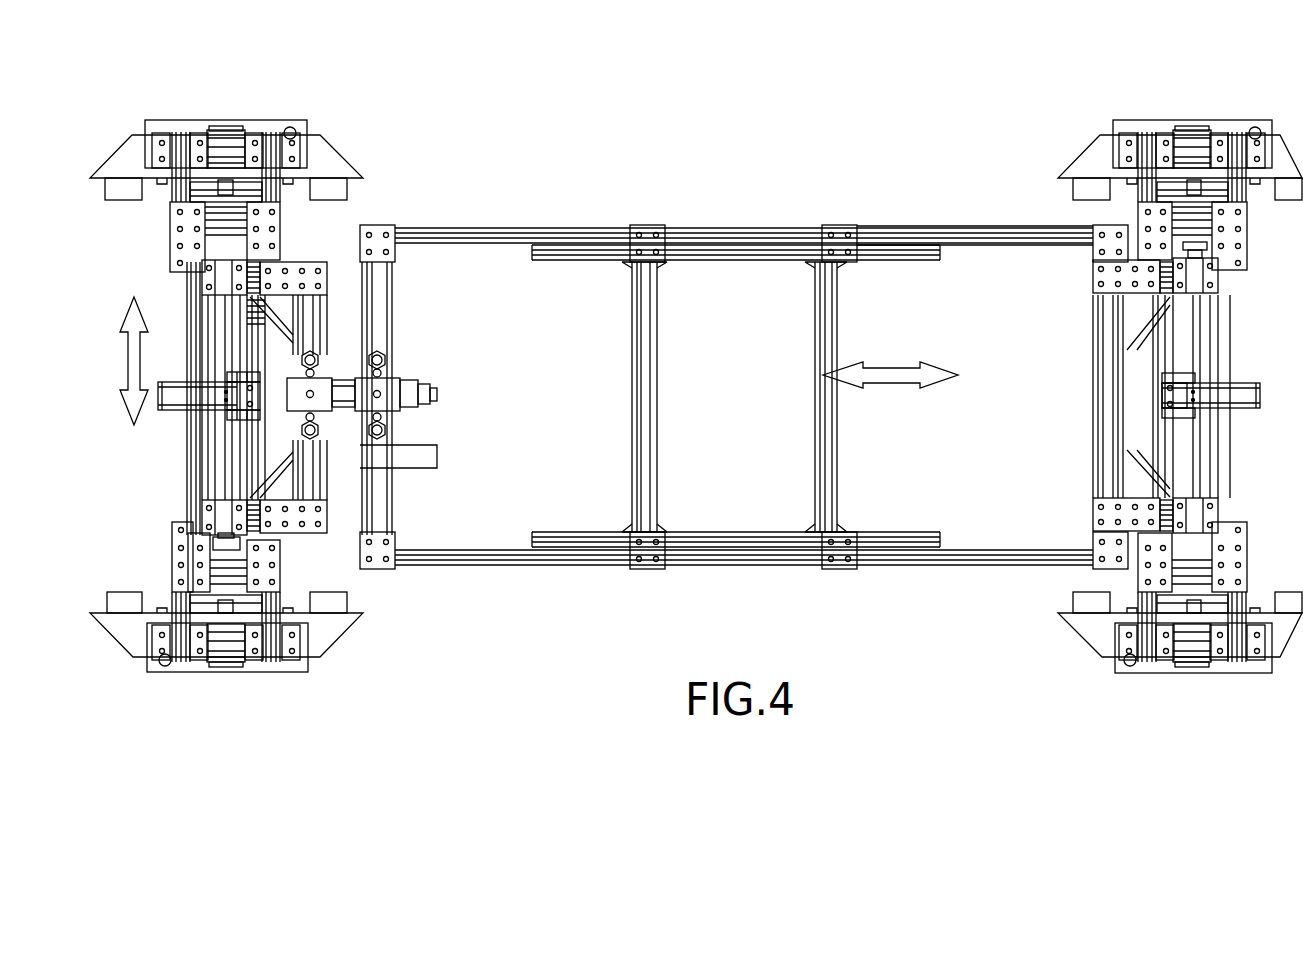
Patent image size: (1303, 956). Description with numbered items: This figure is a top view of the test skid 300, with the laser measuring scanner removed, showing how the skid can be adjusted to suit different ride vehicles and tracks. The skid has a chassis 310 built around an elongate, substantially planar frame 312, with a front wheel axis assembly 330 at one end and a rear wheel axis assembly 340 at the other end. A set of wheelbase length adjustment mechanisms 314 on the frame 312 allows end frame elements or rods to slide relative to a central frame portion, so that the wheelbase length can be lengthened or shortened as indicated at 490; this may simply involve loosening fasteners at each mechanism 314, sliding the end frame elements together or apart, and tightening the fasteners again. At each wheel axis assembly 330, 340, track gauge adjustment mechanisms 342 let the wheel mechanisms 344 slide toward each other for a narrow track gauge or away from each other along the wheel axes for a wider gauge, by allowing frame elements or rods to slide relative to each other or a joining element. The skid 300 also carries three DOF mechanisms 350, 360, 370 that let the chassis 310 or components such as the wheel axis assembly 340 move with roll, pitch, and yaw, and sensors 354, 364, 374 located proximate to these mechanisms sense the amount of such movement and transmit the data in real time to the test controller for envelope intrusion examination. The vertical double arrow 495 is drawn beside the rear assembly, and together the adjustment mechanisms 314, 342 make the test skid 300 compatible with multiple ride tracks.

The test skid 300 is at (1068, 86).
The chassis 310 is at (487, 582).
The frame 312 is at (990, 222).
The wheelbase length adjustment mechanisms 314 is at (788, 571).
The front wheel axis assembly 330 is at (1238, 100).
The rear wheel axis assembly 340 is at (265, 100).
The track gauge adjustment mechanism 342 is at (163, 230).
The wheel mechanisms 344 is at (334, 658).
The DOF mechanism 350 is at (282, 538).
The sensor 354 is at (247, 546).
The DOF mechanism 360 is at (346, 424).
The sensor 364 is at (433, 378).
The DOF mechanism 370 is at (182, 367).
The sensor 374 is at (236, 434).
The wheelbase length adjustment 490 is at (881, 385).
The vertical movement arrow 495 is at (127, 381).